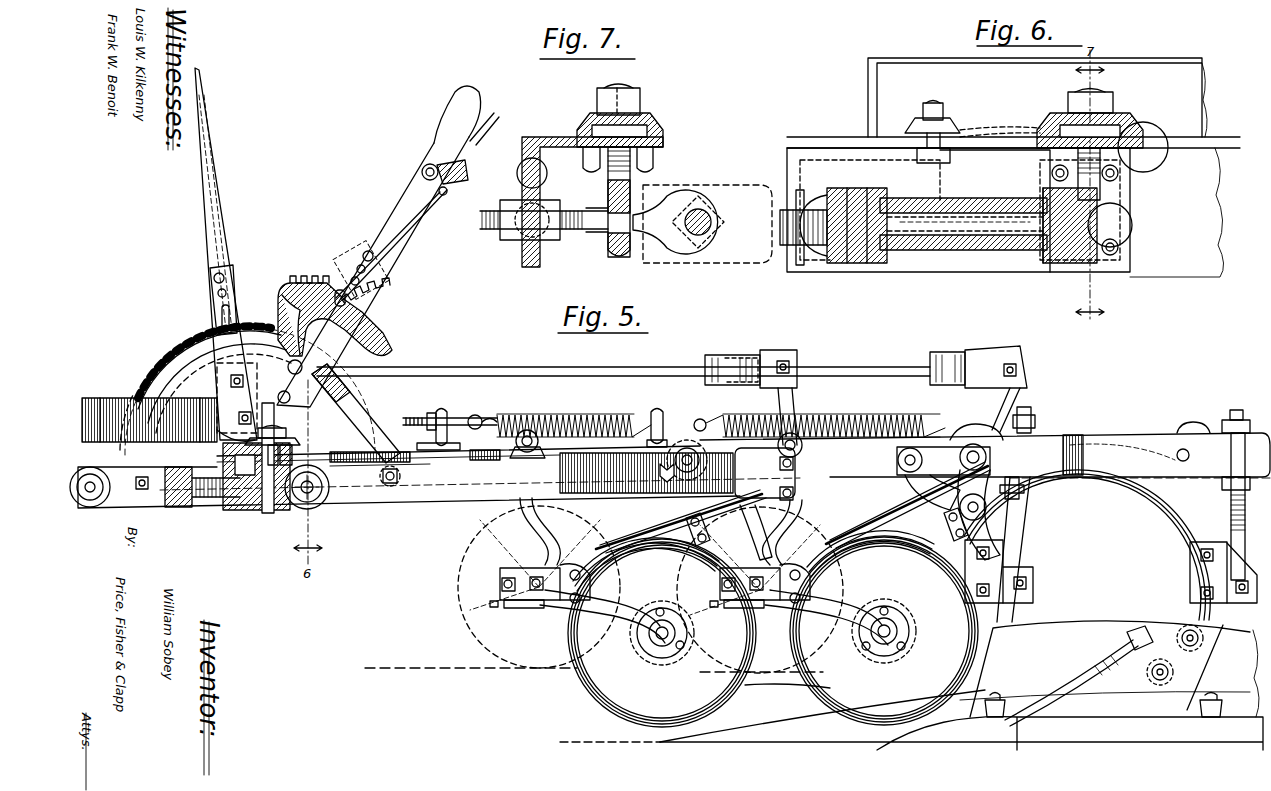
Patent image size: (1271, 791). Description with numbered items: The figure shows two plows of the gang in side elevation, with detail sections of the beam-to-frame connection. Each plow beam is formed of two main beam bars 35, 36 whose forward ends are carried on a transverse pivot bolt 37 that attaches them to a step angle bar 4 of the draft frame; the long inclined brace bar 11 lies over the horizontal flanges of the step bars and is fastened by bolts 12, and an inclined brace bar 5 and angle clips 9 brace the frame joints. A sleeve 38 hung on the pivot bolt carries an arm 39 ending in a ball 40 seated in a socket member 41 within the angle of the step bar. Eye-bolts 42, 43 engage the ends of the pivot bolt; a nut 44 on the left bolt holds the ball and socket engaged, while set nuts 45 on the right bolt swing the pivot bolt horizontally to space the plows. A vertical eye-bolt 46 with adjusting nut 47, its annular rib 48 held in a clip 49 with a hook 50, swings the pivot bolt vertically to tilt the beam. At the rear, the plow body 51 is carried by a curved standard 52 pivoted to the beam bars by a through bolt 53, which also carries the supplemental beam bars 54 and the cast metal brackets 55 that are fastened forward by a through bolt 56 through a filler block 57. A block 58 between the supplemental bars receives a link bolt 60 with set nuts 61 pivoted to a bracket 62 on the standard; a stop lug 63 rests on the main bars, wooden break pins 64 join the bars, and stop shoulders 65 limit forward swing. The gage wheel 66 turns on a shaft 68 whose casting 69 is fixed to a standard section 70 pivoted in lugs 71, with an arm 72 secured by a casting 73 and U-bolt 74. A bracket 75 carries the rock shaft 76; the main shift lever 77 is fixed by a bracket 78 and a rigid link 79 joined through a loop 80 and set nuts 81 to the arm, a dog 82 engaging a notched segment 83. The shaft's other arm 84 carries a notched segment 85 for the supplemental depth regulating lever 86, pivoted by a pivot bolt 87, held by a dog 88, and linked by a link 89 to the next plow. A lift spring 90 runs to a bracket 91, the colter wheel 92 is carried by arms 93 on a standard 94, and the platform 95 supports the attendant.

In FIG. 6, the step angle bar 4 is at (1215, 278).
In FIG. 5, the inclined brace bar 5 is at (168, 503).
In FIG. 7, the angle clip 9 is at (522, 162).
In FIG. 6, the long inclined brace bar 11 is at (868, 101).
In FIG. 5, the long inclined brace bar 11 is at (108, 398).
In FIG. 6, the bolt 12 is at (936, 104).
In FIG. 5, the bolt 12 is at (292, 447).
In FIG. 7, the main beam bar 35 is at (700, 265).
In FIG. 6, the main beam bar 35 is at (1075, 264).
In FIG. 6, the main beam bar 36 is at (882, 264).
In FIG. 5, the main beam bar 36 is at (392, 465).
In FIG. 7, the transverse pivot bolt 37 is at (698, 205).
In FIG. 6, the transverse pivot bolt 37 is at (1020, 250).
In FIG. 5, the transverse pivot bolt 37 is at (96, 468).
In FIG. 6, the sleeve 38 is at (958, 250).
In FIG. 5, the sleeve 38 is at (372, 463).
In FIG. 6, the arm 39 is at (898, 198).
In FIG. 5, the arm 39 is at (274, 512).
In FIG. 6, the ball 40 is at (845, 188).
In FIG. 5, the ball 40 is at (262, 510).
In FIG. 7, the socket member 41 is at (547, 137).
In FIG. 5, the socket member 41 is at (228, 500).
In FIG. 6, the eye-bolt 42 is at (848, 264).
In FIG. 5, the eye-bolt 42 is at (134, 486).
In FIG. 7, the eye-bolt 43 is at (595, 232).
In FIG. 6, the nut 44 is at (800, 266).
In FIG. 5, the nut 44 is at (194, 514).
In FIG. 7, the set nuts 45 is at (515, 243).
In FIG. 6, the set nuts 45 is at (1118, 232).
In FIG. 7, the vertical eye-bolt 46 is at (606, 176).
In FIG. 6, the vertical eye-bolt 46 is at (1103, 182).
In FIG. 5, the vertical eye-bolt 46 is at (300, 455).
In FIG. 7, the adjusting nut 47 is at (622, 117).
In FIG. 6, the adjusting nut 47 is at (1102, 103).
In FIG. 5, the adjusting nut 47 is at (282, 430).
In FIG. 7, the annular rib 48 is at (650, 127).
In FIG. 6, the annular rib 48 is at (1130, 121).
In FIG. 7, the clip 49 is at (652, 116).
In FIG. 6, the clip 49 is at (1010, 128).
In FIG. 5, the clip 49 is at (290, 438).
In FIG. 7, the hook 50 is at (655, 160).
In FIG. 6, the hook 50 is at (1168, 160).
In FIG. 5, the plow body 51 is at (1062, 688).
In FIG. 5, the standard 52 is at (1158, 496).
In FIG. 5, the through bolt 53 is at (700, 460).
In FIG. 5, the supplemental beam bars 54 is at (1152, 425).
In FIG. 5, the cast metal bracket 55 is at (688, 480).
In FIG. 5, the through bolt 56 is at (903, 478).
In FIG. 5, the filler block 57 is at (660, 495).
In FIG. 5, the cast metal block 58 is at (1238, 410).
In FIG. 5, the link bolt 60 is at (1232, 492).
In FIG. 5, the set nuts 61 is at (1032, 417).
In FIG. 5, the bracket 62 is at (1020, 600).
In FIG. 5, the stop lug 63 is at (1192, 420).
In FIG. 5, the wooden break pins 64 is at (1176, 457).
In FIG. 5, the stop shoulders 65 is at (963, 425).
In FIG. 5, the gage wheel 66 is at (458, 608).
In FIG. 5, the shaft 68 is at (580, 565).
In FIG. 5, the casting 69 is at (600, 535).
In FIG. 5, the standard section 70 is at (640, 548).
In FIG. 5, the lugs 71 is at (1000, 505).
In FIG. 5, the arm 72 is at (770, 398).
In FIG. 5, the casting 73 is at (690, 530).
In FIG. 5, the U-bolt 74 is at (680, 560).
In FIG. 5, the bracket 75 is at (215, 430).
In FIG. 5, the rock shaft 76 is at (215, 388).
In FIG. 5, the main shift lever 77 is at (218, 213).
In FIG. 5, the cast metal bracket 78 is at (283, 365).
In FIG. 5, the rigid link 79 is at (758, 356).
In FIG. 5, the loop 80 is at (784, 350).
In FIG. 5, the set nuts 81 is at (722, 354).
In FIG. 5, the dog 82 is at (238, 290).
In FIG. 5, the notched segment 83 is at (178, 352).
In FIG. 5, the arm 84 is at (246, 398).
In FIG. 5, the notched segment 85 is at (382, 322).
In FIG. 5, the supplemental depth regulating lever 86 is at (380, 232).
In FIG. 5, the pivot bolt 87 is at (356, 368).
In FIG. 5, the dog 88 is at (350, 298).
In FIG. 5, the link 89 is at (840, 366).
In FIG. 5, the lift spring 90 is at (598, 418).
In FIG. 5, the bracket 91 is at (448, 420).
In FIG. 5, the colter wheel 92 is at (800, 684).
In FIG. 5, the arms 93 is at (878, 610).
In FIG. 5, the standard 94 is at (525, 526).
In FIG. 5, the platform 95 is at (658, 610).